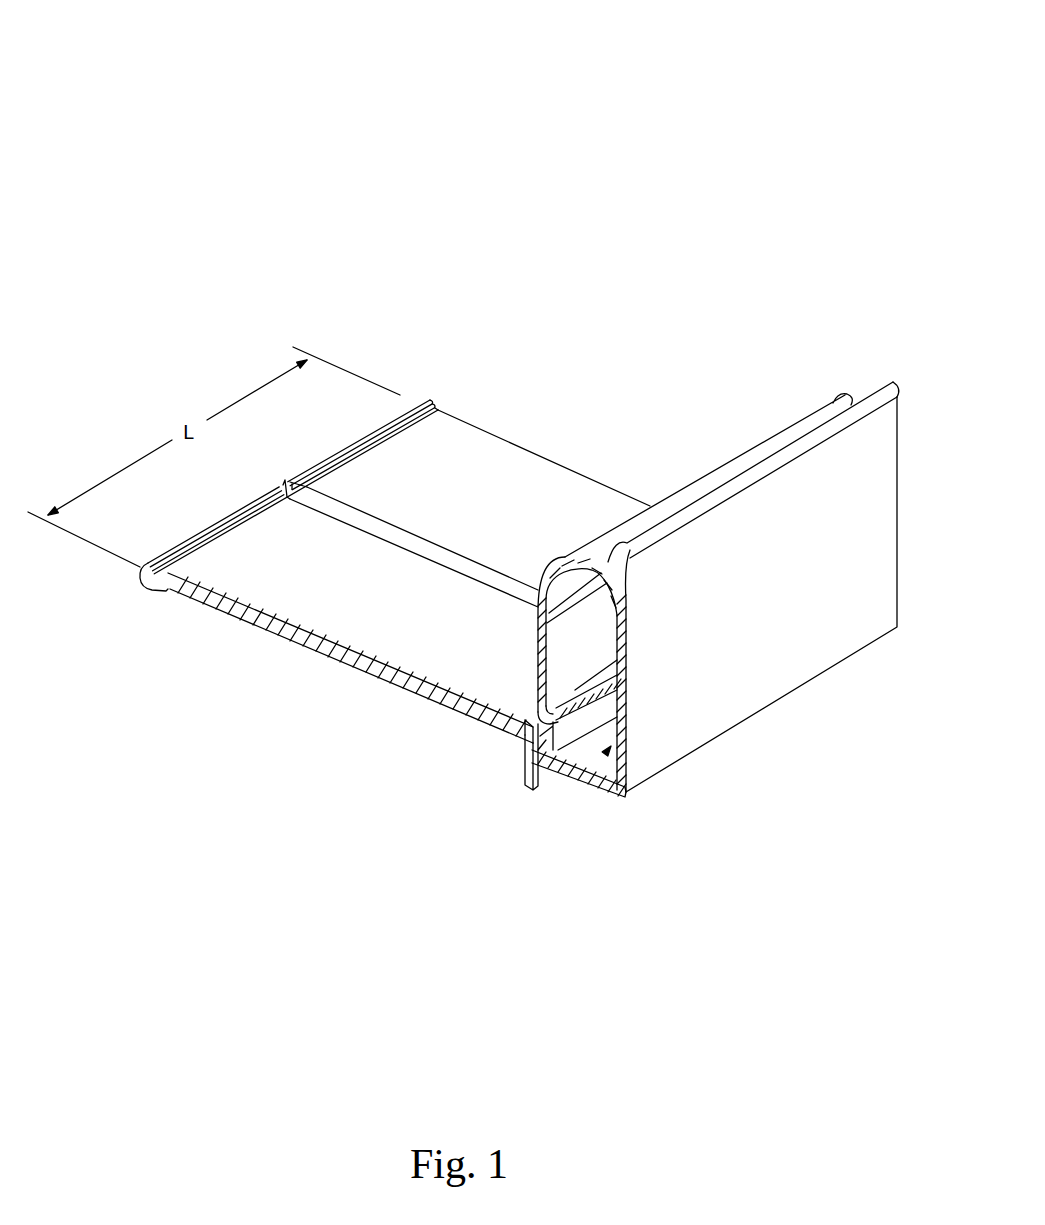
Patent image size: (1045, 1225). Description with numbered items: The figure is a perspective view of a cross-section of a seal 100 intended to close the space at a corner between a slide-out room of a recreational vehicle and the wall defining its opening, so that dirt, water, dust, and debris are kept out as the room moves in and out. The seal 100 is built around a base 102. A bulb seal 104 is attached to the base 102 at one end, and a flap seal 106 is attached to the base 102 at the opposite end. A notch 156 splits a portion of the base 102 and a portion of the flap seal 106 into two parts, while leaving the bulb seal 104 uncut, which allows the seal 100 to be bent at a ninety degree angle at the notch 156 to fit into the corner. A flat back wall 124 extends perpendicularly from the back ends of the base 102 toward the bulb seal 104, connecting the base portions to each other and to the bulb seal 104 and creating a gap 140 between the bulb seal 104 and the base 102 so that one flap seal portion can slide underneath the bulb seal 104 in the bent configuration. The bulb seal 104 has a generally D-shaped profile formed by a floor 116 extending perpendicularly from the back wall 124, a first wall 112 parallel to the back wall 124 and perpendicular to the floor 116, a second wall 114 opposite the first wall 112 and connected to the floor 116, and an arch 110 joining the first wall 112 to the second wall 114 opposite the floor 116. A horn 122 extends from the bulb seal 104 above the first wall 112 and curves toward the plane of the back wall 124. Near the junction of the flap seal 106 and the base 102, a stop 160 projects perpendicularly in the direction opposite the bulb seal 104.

The seal 100 is at (257, 182).
The base 102 is at (558, 767).
The bulb seal 104 is at (898, 480).
The flap seal 106 is at (350, 660).
The arch 110 is at (847, 398).
The first wall 112 is at (628, 690).
The second wall 114 is at (538, 652).
The floor 116 is at (517, 722).
The horn 122 is at (893, 386).
The back wall 124 is at (624, 797).
The gap 140 is at (609, 750).
The notch 156 is at (281, 482).
The stop 160 is at (526, 781).